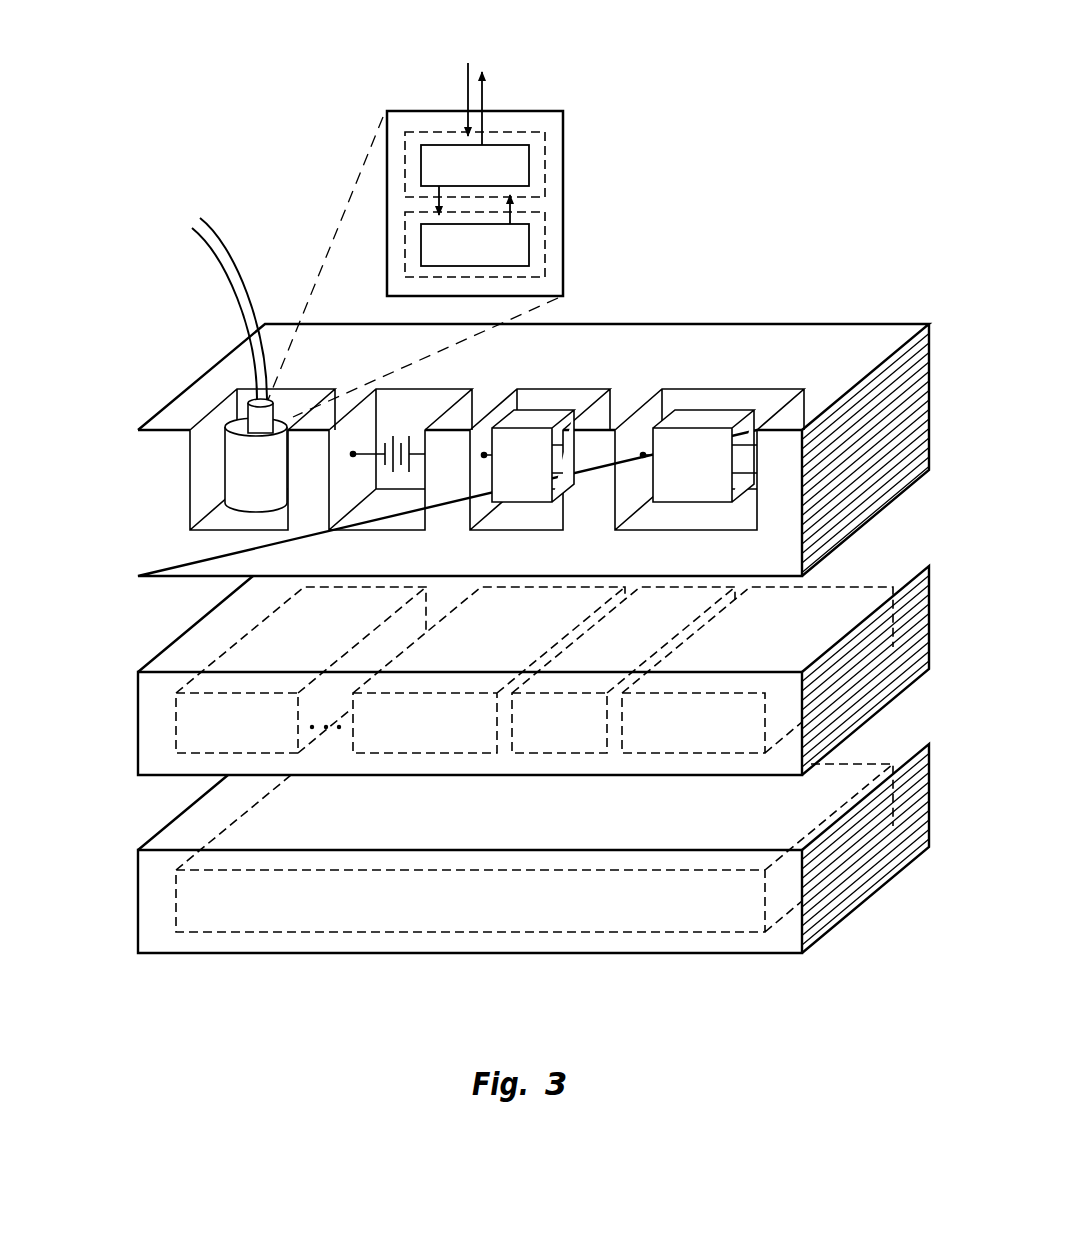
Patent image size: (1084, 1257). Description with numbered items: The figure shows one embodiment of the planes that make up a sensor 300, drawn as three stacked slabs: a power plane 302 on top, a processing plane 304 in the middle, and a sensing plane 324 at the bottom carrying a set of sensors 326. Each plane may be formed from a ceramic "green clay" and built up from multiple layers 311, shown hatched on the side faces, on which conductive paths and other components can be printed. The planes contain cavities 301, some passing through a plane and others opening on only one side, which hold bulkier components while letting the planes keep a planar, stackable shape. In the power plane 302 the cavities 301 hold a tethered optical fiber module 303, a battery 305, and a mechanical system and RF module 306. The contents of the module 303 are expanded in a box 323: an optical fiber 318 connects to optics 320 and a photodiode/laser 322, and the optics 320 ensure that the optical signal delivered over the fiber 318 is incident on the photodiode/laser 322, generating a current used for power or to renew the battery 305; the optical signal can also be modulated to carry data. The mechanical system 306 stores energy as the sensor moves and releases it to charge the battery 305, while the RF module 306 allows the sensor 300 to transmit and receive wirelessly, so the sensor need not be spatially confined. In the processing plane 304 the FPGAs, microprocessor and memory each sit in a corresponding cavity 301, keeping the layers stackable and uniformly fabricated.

The sensor 300 is at (745, 122).
The cavities 301 is at (534, 571).
The power plane 302 is at (237, 347).
The tethered optical fiber module 303 is at (272, 405).
The processing plane 304 is at (150, 723).
The battery 305 is at (403, 433).
The mechanical system / RF module 306 is at (718, 413).
The layers 311 is at (864, 644).
The optical fiber 318 is at (485, 93).
The optics 320 is at (421, 160).
The photodiode/laser 322 is at (421, 243).
The box 323 is at (562, 153).
The sensing plane 324 is at (148, 904).
The set of sensors 326 is at (475, 870).